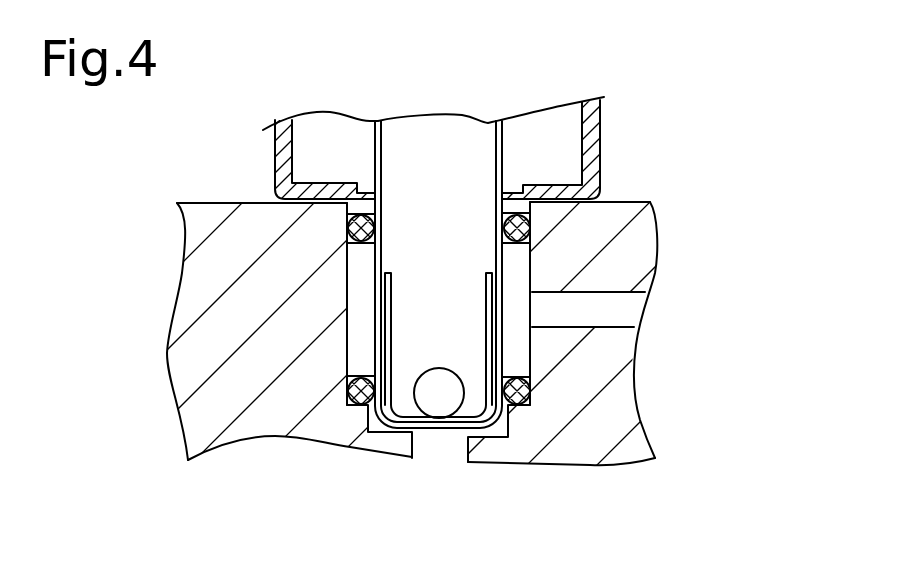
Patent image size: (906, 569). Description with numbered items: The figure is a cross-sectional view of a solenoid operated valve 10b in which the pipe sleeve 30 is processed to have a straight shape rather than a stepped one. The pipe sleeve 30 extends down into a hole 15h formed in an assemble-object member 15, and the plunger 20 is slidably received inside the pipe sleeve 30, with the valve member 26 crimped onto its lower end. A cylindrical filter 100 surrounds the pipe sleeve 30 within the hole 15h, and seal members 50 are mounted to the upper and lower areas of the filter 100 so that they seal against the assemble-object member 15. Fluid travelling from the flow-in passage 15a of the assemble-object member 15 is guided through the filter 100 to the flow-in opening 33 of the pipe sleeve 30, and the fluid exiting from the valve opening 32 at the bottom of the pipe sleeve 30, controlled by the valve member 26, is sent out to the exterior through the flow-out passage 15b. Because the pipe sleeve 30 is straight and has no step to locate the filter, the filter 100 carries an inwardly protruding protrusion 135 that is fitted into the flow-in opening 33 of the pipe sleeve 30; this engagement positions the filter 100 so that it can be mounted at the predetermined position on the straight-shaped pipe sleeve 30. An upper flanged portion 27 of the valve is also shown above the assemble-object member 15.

The solenoid operated valve 10b is at (695, 150).
The assemble-object member 15 is at (453, 284).
The flow-in passage 15a is at (617, 316).
The flow-out passage 15b is at (410, 458).
The hole 15h is at (358, 280).
The plunger 20 is at (423, 133).
The valve member 26 is at (432, 396).
The flange wall 27 is at (592, 100).
The pipe sleeve 30 is at (484, 122).
The valve opening 32 is at (447, 430).
The flow-in opening 33 is at (377, 326).
The seal member 50 is at (363, 214).
The filter 100 is at (522, 277).
The protrusion 135 is at (502, 304).